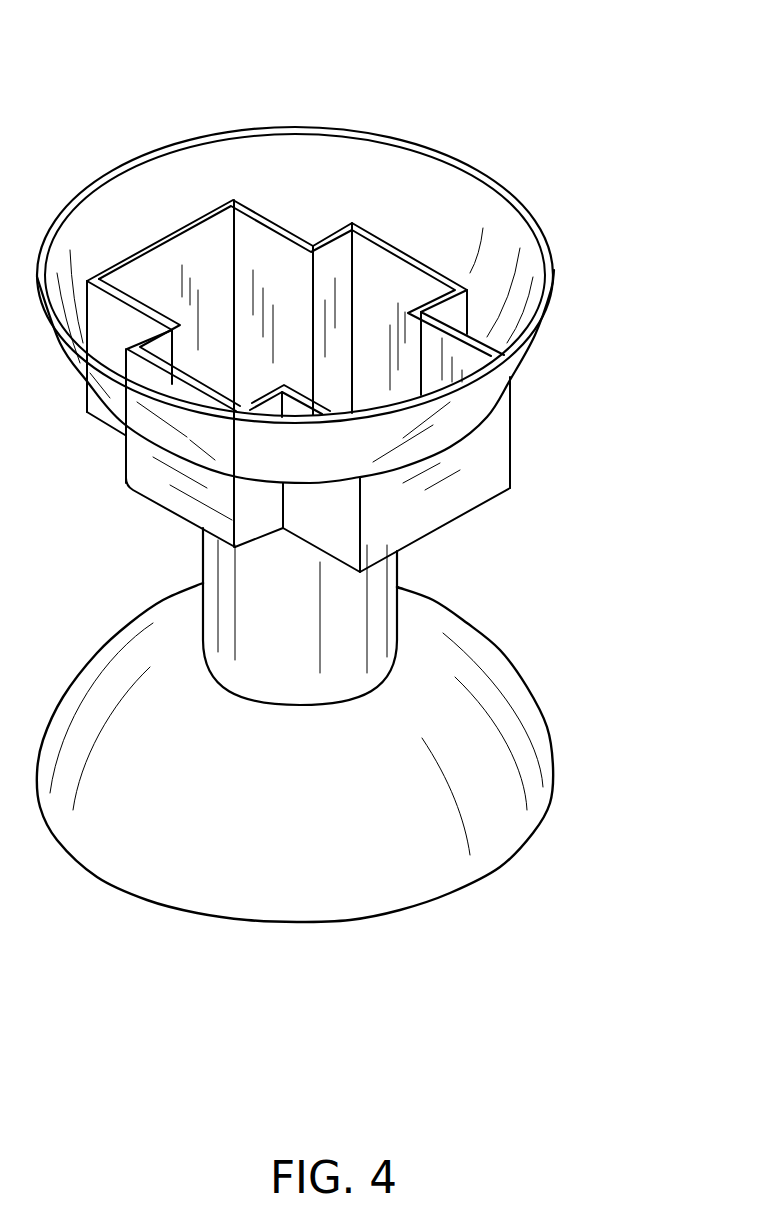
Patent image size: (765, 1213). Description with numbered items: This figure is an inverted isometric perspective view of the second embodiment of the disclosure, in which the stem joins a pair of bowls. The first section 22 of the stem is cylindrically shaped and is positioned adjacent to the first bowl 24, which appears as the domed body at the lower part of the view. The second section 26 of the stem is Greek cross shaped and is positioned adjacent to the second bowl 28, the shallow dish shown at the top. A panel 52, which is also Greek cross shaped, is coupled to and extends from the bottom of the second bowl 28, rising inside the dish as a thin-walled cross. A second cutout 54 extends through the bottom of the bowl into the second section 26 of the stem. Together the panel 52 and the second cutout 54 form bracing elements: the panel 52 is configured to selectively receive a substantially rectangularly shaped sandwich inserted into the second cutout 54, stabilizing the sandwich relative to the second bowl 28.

The first section 22 is at (360, 617).
The first bowl 24 is at (497, 755).
The second section 26 is at (442, 487).
The second bowl 28 is at (495, 380).
The panel 52 is at (404, 248).
The second cutout 54 is at (298, 305).